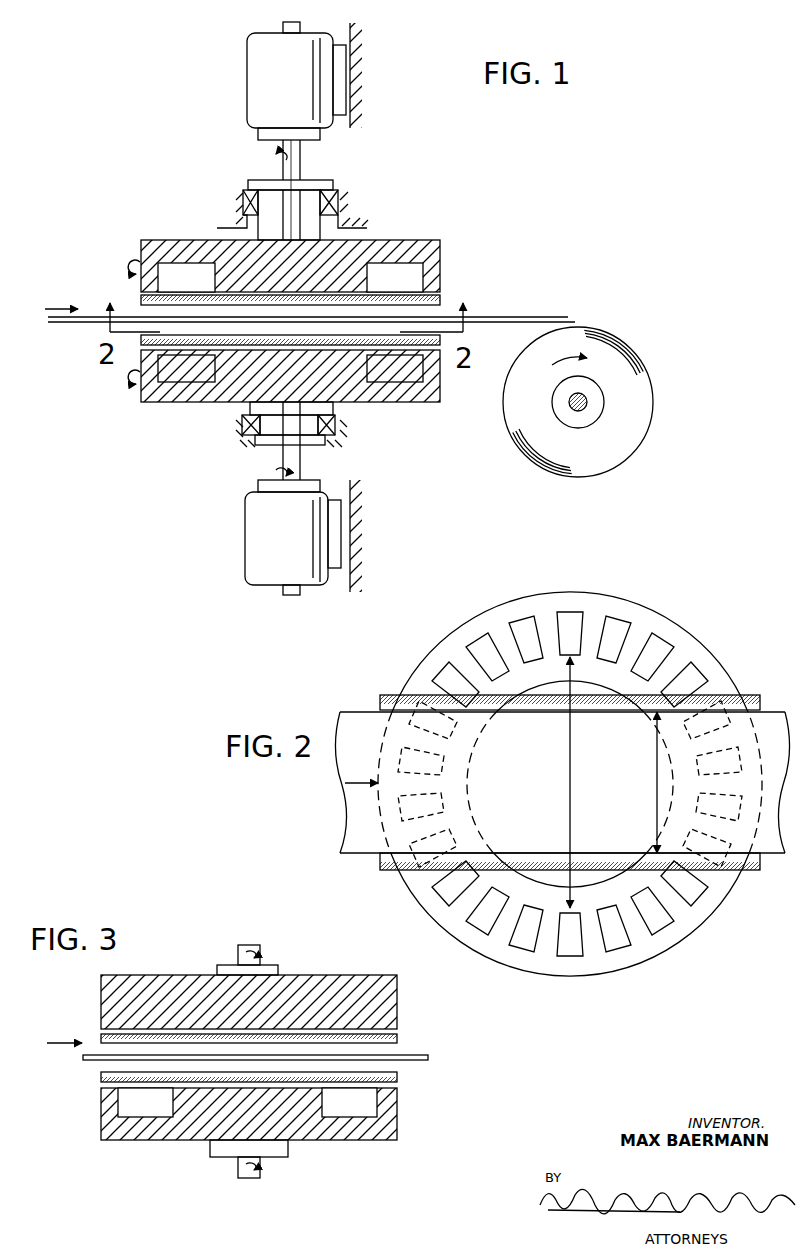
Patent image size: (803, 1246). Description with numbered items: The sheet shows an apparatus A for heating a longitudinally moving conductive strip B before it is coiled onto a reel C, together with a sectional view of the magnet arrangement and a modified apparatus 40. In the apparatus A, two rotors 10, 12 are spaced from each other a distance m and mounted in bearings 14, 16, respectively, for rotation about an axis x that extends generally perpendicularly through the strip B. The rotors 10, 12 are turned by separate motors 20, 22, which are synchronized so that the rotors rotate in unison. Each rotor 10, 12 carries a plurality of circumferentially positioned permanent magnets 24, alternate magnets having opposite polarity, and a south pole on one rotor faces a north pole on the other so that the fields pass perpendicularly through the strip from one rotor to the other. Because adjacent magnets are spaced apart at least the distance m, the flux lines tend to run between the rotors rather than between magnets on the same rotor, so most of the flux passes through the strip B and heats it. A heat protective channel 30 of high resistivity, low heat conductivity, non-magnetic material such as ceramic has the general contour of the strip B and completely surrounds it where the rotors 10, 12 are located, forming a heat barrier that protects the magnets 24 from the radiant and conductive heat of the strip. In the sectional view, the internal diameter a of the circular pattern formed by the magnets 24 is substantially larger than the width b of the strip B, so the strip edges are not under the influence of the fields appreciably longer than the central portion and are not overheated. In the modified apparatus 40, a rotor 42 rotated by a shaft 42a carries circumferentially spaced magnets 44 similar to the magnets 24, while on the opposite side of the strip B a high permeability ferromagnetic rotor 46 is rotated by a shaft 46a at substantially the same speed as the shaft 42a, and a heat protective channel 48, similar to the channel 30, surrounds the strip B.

In FIG. 1, the rotor 10 is at (366, 252).
In FIG. 2, the rotor 10 is at (682, 636).
In FIG. 1, the rotor 12 is at (412, 404).
In FIG. 1, the bearing 14 is at (339, 206).
In FIG. 1, the bearing 16 is at (340, 430).
In FIG. 1, the motor 20 is at (247, 72).
In FIG. 1, the motor 22 is at (328, 592).
In FIG. 1, the permanent magnets 24 is at (386, 266).
In FIG. 2, the permanent magnets 24 is at (527, 620).
In FIG. 1, the heat protective channel 30 is at (444, 298).
In FIG. 2, the heat protective channel 30 is at (758, 697).
In FIG. 3, the apparatus 40 is at (266, 1064).
In FIG. 3, the rotor 42 is at (362, 1143).
In FIG. 3, the shaft 42a is at (246, 1180).
In FIG. 3, the magnets 44 is at (373, 1109).
In FIG. 3, the ferromagnetic rotor 46 is at (315, 980).
In FIG. 3, the shaft 46a is at (242, 946).
In FIG. 3, the heat protective channel 48 is at (128, 1040).
In FIG. 1, the apparatus A is at (466, 222).
In FIG. 2, the apparatus A is at (645, 596).
In FIG. 1, the conductive strip B is at (508, 321).
In FIG. 2, the conductive strip B is at (357, 832).
In FIG. 3, the conductive strip B is at (430, 1052).
In FIG. 1, the reel C is at (661, 362).
In FIG. 2, the internal diameter a is at (568, 764).
In FIG. 2, the width b is at (655, 770).
In FIG. 1, the distance m is at (140, 297).
In FIG. 1, the axis x is at (290, 262).